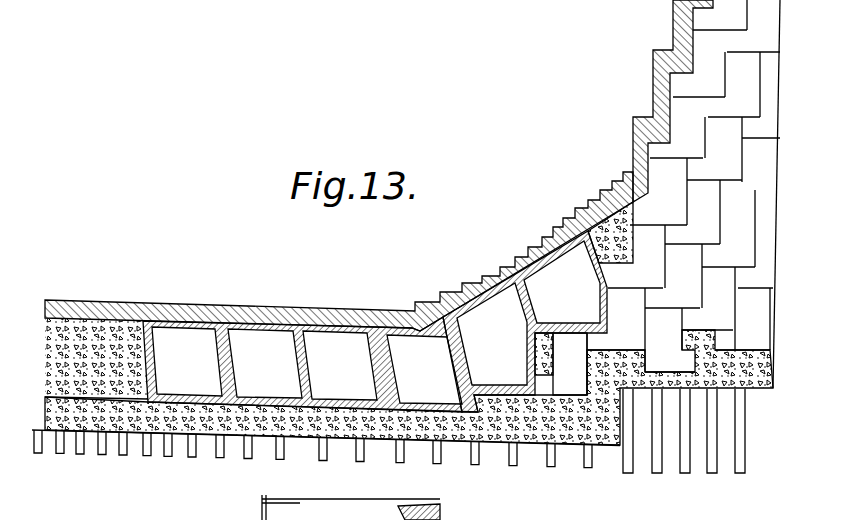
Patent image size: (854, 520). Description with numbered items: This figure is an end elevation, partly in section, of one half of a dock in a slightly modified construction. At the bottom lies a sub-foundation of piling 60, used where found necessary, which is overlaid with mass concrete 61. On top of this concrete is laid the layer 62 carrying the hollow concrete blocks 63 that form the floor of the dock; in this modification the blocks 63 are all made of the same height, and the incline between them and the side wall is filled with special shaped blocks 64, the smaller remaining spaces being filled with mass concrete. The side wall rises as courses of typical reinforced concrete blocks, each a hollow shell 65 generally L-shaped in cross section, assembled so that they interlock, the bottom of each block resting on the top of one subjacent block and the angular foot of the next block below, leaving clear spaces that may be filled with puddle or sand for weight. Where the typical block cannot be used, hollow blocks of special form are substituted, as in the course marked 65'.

The piling 60 is at (235, 466).
The mass concrete 61 is at (138, 408).
The insulating slab 62 is at (122, 342).
The blocks 63 is at (204, 333).
The special shaped blocks 64 is at (490, 275).
The hollow shell 65 is at (645, 101).
The special form of blocks 65' is at (707, 197).